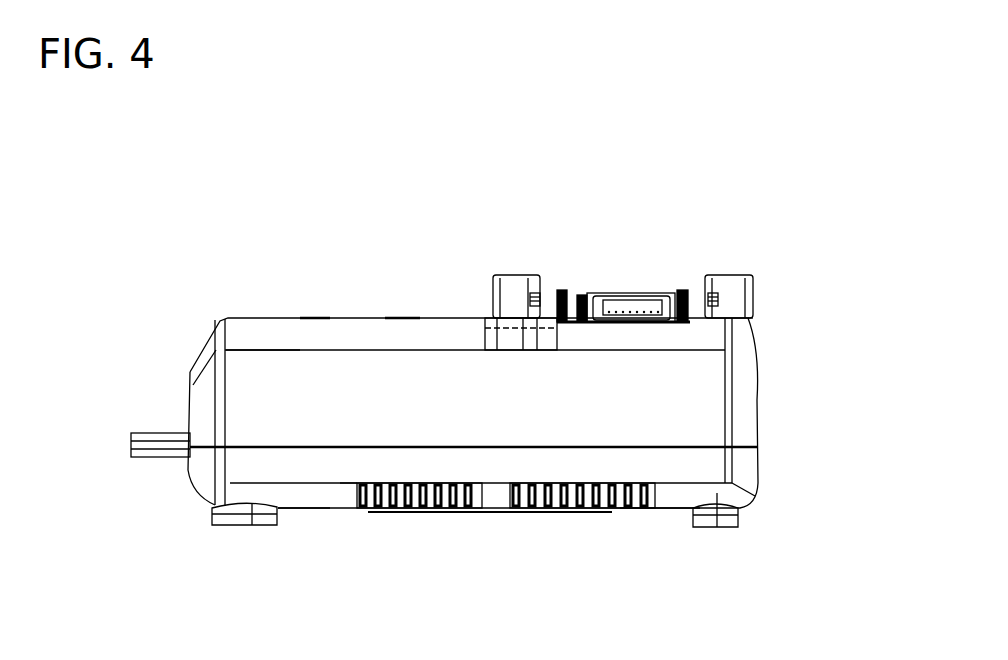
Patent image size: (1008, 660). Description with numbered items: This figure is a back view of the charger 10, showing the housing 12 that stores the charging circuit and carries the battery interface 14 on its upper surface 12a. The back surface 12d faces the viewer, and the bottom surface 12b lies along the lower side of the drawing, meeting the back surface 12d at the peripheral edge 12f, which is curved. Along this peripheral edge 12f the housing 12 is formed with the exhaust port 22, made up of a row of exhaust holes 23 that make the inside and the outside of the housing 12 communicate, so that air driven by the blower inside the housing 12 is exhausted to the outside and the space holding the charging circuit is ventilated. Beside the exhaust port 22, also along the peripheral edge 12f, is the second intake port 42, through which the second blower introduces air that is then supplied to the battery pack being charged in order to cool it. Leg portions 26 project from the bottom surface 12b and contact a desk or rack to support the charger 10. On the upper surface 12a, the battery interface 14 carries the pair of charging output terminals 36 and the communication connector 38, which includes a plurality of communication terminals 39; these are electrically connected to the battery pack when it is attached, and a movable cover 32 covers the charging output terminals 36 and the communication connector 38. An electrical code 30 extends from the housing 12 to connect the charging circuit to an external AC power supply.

The charger 10 is at (797, 245).
The housing 12 is at (745, 378).
The upper surface 12a is at (357, 318).
The bottom surface 12b is at (657, 512).
The back surface 12d is at (275, 370).
The peripheral edge 12f is at (297, 497).
The battery interface 14 is at (697, 265).
The exhaust port 22 is at (482, 516).
The exhaust holes 23 is at (352, 485).
The leg portions 26 is at (220, 525).
The electrical code 30 is at (143, 437).
The movable cover 32 is at (590, 292).
The charging output terminals 36 is at (585, 292).
The communication connector 38 is at (644, 292).
The communication terminals 39 is at (617, 300).
The second intake port 42 is at (655, 516).